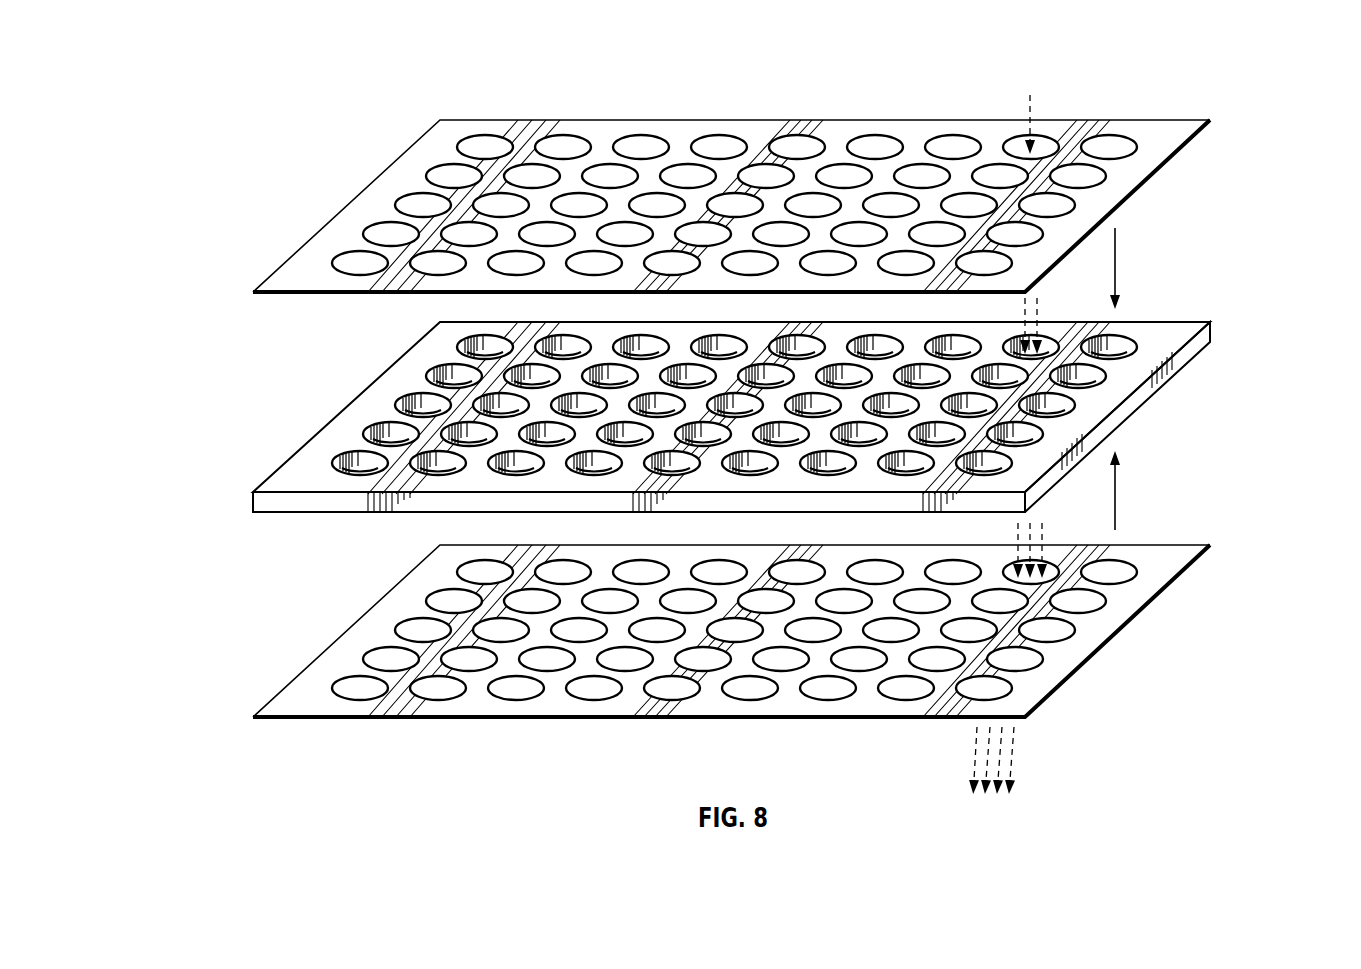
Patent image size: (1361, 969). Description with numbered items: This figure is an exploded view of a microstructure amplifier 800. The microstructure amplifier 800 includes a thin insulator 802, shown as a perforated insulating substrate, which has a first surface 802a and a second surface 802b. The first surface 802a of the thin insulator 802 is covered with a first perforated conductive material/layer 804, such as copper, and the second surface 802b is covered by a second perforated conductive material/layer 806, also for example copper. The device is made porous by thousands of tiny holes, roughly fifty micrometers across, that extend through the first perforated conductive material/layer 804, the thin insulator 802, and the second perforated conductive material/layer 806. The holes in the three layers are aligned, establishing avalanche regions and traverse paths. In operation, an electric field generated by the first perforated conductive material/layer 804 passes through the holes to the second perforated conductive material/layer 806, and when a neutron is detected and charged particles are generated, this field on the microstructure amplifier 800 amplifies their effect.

The microstructure amplifier 800 is at (743, 412).
The thin insulator 802 is at (706, 438).
The first surface 802a is at (285, 484).
The second surface 802b is at (285, 515).
The first perforated conductive material/layer 804 is at (488, 112).
The second perforated conductive material/layer 806 is at (731, 668).